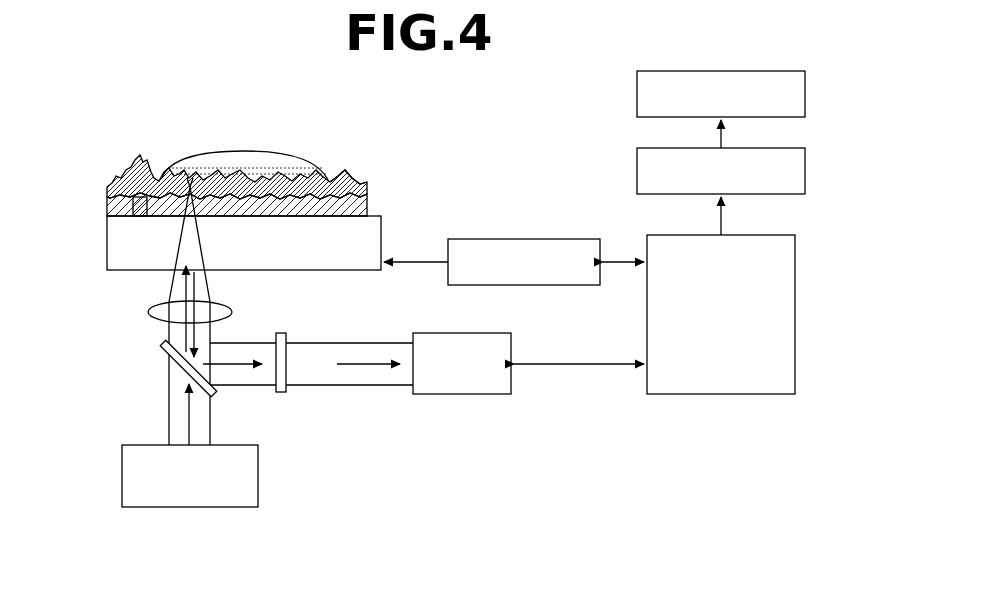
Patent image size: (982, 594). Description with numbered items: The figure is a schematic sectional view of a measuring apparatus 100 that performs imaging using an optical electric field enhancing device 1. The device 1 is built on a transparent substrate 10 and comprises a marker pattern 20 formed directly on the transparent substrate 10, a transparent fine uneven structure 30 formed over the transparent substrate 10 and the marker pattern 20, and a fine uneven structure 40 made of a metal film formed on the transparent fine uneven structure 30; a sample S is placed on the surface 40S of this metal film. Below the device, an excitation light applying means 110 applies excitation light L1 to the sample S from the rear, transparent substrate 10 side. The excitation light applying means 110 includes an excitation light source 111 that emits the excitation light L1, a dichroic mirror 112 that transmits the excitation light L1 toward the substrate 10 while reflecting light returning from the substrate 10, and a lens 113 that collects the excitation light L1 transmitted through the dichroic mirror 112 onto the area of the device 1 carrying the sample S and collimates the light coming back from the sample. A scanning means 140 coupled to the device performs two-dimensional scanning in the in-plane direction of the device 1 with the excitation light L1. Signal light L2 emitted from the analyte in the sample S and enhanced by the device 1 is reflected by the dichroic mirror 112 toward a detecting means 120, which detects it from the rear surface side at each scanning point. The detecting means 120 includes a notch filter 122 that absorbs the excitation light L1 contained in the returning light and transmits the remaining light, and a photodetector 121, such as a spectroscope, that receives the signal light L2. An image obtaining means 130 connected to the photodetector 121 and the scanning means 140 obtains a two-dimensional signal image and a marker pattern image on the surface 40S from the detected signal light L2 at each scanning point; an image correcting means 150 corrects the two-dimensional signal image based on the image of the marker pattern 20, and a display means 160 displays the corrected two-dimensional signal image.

The optical electric field enhancing device 1 is at (136, 141).
The transparent substrate 10 is at (373, 242).
The marker pattern 20 is at (132, 205).
The transparent fine uneven structure 30 is at (368, 204).
The fine uneven structure 40 is at (368, 190).
The surface 40S is at (353, 178).
The sample S is at (303, 163).
The measuring apparatus 100 is at (767, 60).
The excitation light applying means 110 is at (283, 530).
The excitation light source 111 is at (224, 500).
The dichroic mirror 112 is at (162, 346).
The lens 113 is at (149, 312).
The excitation light L1 is at (188, 416).
The signal light L2 is at (240, 364).
The detecting means 120 is at (403, 450).
The photodetector 121 is at (474, 390).
The notch filter 122 is at (280, 393).
The image obtaining means 130 is at (760, 390).
The scanning means 140 is at (553, 240).
The image correcting means 150 is at (640, 173).
The display means 160 is at (640, 95).